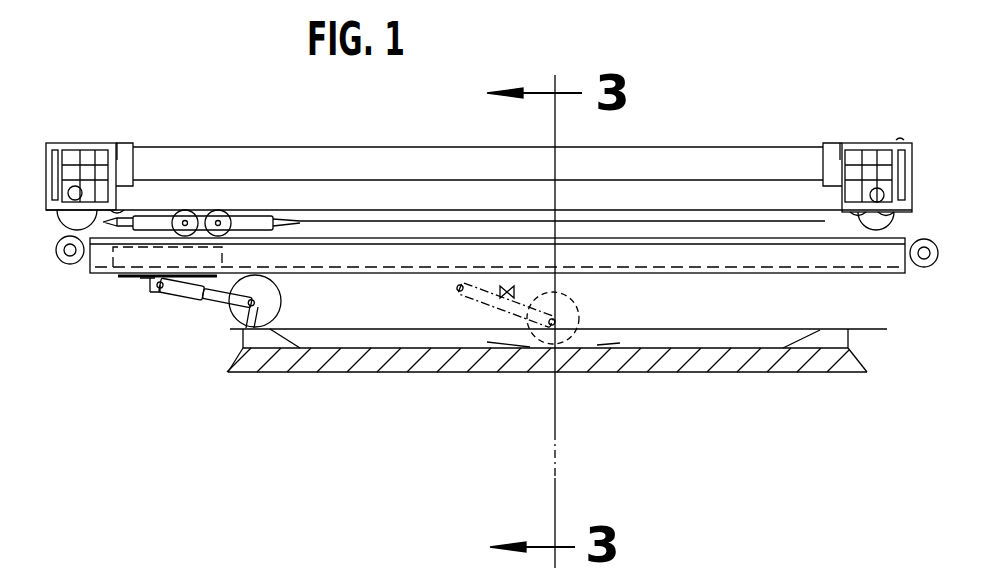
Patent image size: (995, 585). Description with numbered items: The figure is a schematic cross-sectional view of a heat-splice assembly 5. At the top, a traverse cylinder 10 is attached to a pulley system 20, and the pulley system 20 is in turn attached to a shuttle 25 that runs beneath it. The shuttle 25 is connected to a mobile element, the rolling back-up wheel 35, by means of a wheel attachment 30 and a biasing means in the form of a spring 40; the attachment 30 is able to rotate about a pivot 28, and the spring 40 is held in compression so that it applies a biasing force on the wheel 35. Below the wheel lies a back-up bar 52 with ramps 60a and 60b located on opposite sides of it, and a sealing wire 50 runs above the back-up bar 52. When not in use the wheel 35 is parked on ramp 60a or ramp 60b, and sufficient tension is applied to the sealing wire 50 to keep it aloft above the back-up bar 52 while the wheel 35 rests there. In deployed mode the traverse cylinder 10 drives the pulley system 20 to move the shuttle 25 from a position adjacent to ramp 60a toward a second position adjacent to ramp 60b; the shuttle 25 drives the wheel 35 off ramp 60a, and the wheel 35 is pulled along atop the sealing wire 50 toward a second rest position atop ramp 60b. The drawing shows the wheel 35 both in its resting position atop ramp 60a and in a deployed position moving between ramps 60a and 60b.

The heat-splice assembly 5 is at (641, 129).
The traverse cylinder 10 is at (391, 142).
The pulley system 20 is at (205, 201).
The shuttle 25 is at (118, 278).
The pivot 28 is at (152, 288).
The wheel attachment 30 is at (162, 288).
The rolling back-up wheel 35 is at (253, 330).
The spring 40 is at (195, 294).
The sealing wire 50 is at (403, 330).
The back-up bar 52 is at (628, 378).
The ramp 60a is at (287, 363).
The ramp 60b is at (821, 347).